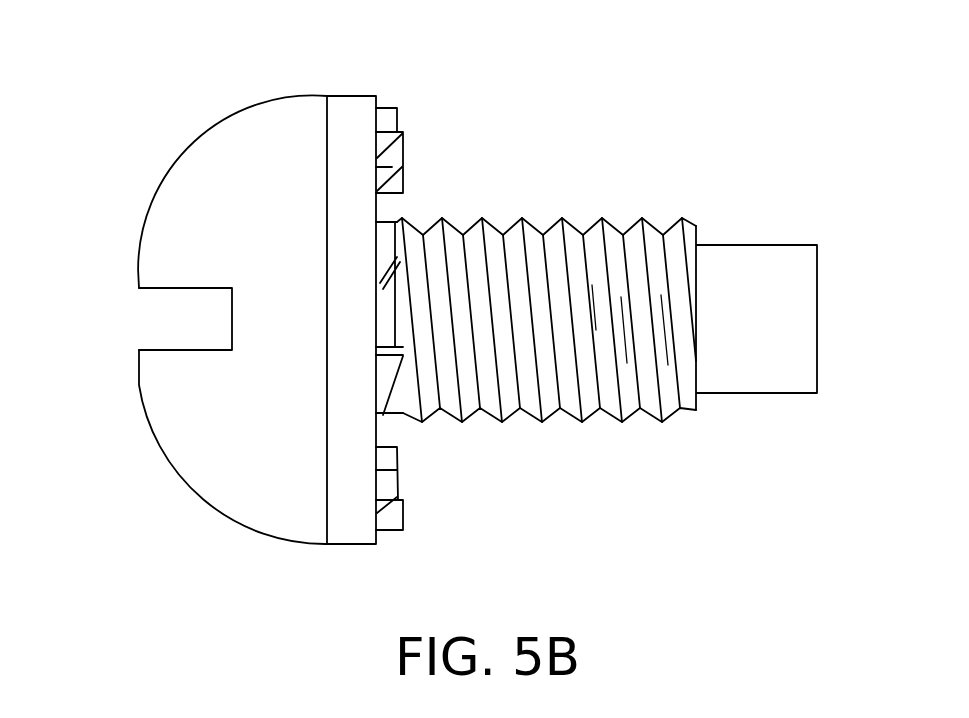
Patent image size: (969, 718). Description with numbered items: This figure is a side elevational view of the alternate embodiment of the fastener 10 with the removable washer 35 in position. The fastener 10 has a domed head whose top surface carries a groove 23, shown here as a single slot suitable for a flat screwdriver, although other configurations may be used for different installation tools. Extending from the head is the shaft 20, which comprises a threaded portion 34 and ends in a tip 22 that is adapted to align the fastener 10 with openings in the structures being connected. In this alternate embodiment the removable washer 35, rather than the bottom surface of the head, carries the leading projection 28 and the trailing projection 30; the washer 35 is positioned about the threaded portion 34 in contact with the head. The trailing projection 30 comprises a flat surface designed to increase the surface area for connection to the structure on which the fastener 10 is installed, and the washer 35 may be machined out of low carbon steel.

The fastener 10 is at (197, 113).
The shaft 20 is at (523, 218).
The tip 22 is at (778, 363).
The groove 23 is at (200, 327).
The leading projection 28 is at (402, 145).
The trailing projection 30 is at (405, 515).
The threaded portion 34 is at (612, 230).
The removable washer 35 is at (362, 110).